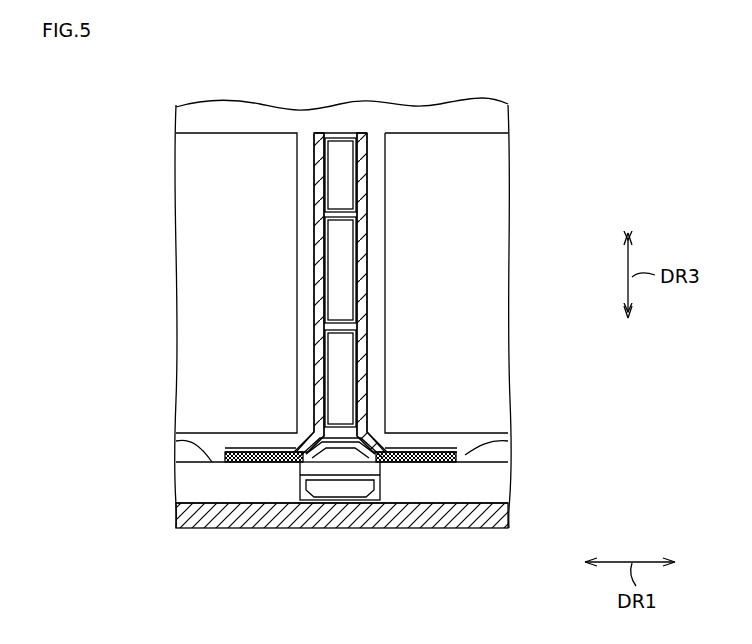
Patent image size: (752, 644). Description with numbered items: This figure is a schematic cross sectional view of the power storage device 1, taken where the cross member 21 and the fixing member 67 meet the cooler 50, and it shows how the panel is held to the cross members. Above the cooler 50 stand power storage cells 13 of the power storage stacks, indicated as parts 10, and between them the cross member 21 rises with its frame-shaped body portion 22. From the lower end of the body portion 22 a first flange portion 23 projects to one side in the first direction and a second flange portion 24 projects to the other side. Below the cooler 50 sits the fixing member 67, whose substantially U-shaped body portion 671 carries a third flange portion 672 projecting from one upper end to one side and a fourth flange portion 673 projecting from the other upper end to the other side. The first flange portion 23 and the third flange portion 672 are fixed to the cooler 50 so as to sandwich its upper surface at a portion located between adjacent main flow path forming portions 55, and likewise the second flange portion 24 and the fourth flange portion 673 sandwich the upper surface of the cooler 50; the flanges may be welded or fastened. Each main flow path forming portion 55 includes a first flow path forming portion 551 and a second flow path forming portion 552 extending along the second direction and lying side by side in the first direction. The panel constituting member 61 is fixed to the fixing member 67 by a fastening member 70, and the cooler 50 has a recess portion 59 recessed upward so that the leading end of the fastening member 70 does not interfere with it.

The power storage device 1 is at (531, 97).
The pixel unit 10 is at (342, 230).
The power storage cell 13 is at (241, 133).
The cross member 21 is at (341, 256).
The body portion 22 is at (340, 138).
The first flange portion 23 is at (258, 442).
The second flange portion 24 is at (440, 450).
The cooler 50 is at (209, 476).
The main flow path forming portion 55 is at (344, 448).
The first flow path forming portion 551 is at (512, 440).
The second flow path forming portion 552 is at (178, 440).
The recess portion 59 is at (358, 440).
The panel constituting member 61 is at (468, 503).
The fixing member 67 is at (340, 535).
The body portion 671 is at (345, 503).
The third flange portion 672 is at (262, 464).
The fourth flange portion 673 is at (410, 464).
The fastening member 70 is at (364, 456).